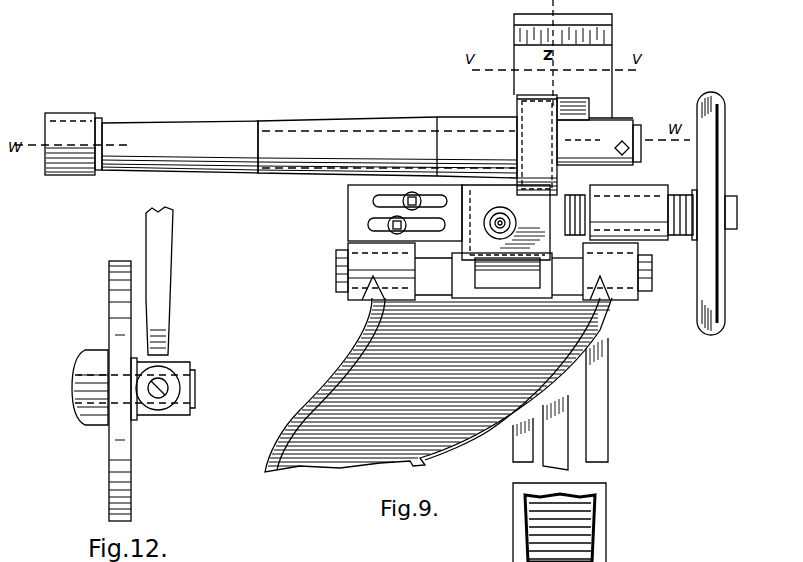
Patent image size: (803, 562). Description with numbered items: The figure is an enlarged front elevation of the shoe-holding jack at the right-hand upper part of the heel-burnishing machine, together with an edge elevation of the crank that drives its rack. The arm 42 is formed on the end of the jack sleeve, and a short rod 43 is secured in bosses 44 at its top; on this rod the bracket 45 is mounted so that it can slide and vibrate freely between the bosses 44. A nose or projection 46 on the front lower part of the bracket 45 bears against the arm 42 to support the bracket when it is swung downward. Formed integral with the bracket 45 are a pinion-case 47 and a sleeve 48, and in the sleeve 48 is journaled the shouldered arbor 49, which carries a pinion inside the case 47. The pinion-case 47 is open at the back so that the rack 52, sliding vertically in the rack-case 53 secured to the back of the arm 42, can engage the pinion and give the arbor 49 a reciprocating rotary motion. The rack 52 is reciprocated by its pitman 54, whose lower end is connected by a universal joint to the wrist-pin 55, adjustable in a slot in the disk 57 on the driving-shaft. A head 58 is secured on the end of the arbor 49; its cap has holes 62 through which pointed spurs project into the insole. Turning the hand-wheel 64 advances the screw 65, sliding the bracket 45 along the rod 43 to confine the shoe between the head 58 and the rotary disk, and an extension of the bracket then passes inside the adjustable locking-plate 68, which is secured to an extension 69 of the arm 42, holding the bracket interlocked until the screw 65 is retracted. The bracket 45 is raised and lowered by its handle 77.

In FIG. 9, the arm 42 is at (438, 374).
In FIG. 9, the short rod 43 is at (336, 270).
In FIG. 9, the bosses 44 is at (493, 271).
In FIG. 9, the bracket 45 is at (506, 222).
In FIG. 9, the nose or projection 46 is at (502, 275).
In FIG. 9, the pinion-case 47 is at (537, 145).
In FIG. 9, the sleeve 48 is at (387, 147).
In FIG. 9, the arbor 49 is at (381, 135).
In FIG. 9, the rack 52 is at (540, 515).
In FIG. 9, the rack-case 53 is at (606, 515).
In FIG. 12, the pitman 54 is at (170, 281).
In FIG. 12, the wrist-pin 55 is at (172, 366).
In FIG. 12, the disk 57 is at (109, 311).
In FIG. 9, the head 58 is at (102, 120).
In FIG. 9, the holes 62 is at (70, 144).
In FIG. 9, the hand-wheel 64 is at (725, 290).
In FIG. 9, the screw 65 is at (627, 212).
In FIG. 9, the locking-plate 68 is at (358, 221).
In FIG. 9, the extension 69 is at (348, 190).
In FIG. 9, the handle 77 is at (493, 208).